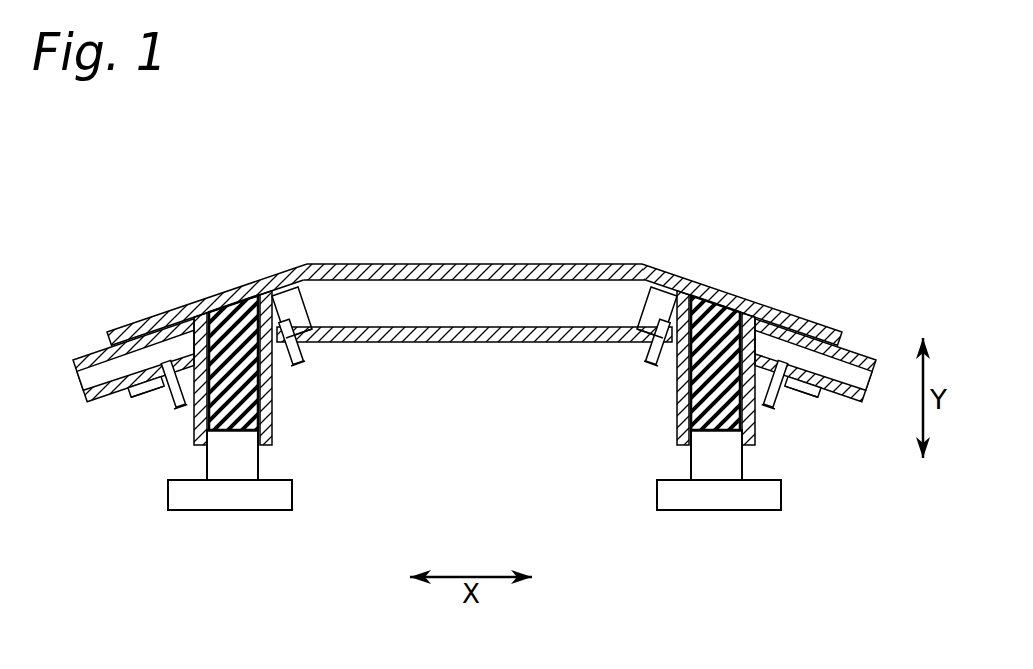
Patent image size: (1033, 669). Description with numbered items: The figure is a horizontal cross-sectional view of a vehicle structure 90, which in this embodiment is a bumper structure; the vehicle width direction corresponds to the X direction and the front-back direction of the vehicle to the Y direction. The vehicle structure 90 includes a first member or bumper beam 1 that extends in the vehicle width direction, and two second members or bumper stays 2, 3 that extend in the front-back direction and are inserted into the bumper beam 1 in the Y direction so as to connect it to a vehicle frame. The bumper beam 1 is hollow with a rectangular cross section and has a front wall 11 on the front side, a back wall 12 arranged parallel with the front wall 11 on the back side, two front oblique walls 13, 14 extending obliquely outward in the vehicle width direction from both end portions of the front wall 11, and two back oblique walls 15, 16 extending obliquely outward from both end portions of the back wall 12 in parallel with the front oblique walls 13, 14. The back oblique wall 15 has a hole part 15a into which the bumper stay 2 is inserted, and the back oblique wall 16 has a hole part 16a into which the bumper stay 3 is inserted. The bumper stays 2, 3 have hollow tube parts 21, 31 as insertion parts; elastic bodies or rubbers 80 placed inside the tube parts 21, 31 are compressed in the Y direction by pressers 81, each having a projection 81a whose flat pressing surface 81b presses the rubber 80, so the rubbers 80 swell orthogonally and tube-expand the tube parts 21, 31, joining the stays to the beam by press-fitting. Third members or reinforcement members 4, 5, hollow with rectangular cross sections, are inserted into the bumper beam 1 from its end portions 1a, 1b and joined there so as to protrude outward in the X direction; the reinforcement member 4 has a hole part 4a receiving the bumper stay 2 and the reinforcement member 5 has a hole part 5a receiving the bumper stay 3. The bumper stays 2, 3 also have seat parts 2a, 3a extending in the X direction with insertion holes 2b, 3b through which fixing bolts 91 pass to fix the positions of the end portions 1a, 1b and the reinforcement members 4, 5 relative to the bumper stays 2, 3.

The first member (bumper beam) 1 is at (671, 263).
The end portion 1a is at (158, 297).
The end portion 1b is at (788, 299).
The second member (bumper stay) 2 is at (279, 443).
The seat part 2a is at (156, 397).
The insertion hole 2b is at (168, 410).
The second member (bumper stay) 3 is at (670, 444).
The seat part 3a is at (641, 352).
The insertion hole 3b is at (649, 362).
The third member (reinforcement member) 4 is at (313, 304).
The hole part 4a is at (178, 405).
The third member (reinforcement member) 5 is at (630, 306).
The hole part 5a is at (772, 406).
The front wall 11 is at (476, 264).
The back wall 12 is at (470, 343).
The front oblique wall 13 is at (118, 330).
The front oblique wall 14 is at (826, 322).
The back oblique wall 15 is at (100, 404).
The hole part 15a is at (290, 364).
The back oblique wall 16 is at (836, 413).
The hole part 16a is at (659, 364).
The tube part 21 is at (272, 423).
The tube part 31 is at (672, 441).
The elastic body (rubber) 80 is at (270, 413).
The presser 81 is at (158, 486).
The projection 81a is at (230, 466).
The pressing surface 81b is at (243, 434).
The vehicle structure 90 is at (878, 260).
The fixing bolt 91 is at (181, 410).